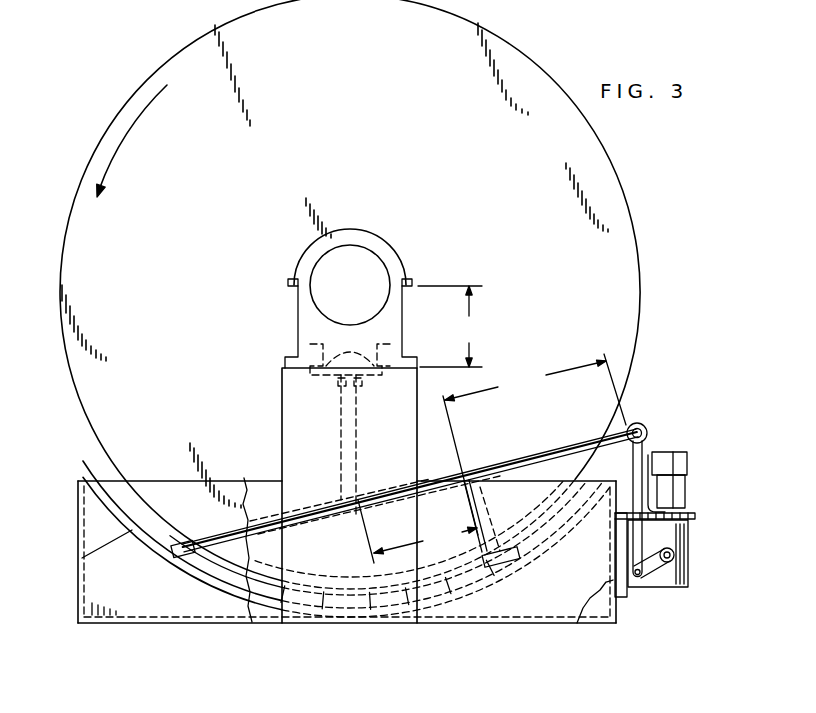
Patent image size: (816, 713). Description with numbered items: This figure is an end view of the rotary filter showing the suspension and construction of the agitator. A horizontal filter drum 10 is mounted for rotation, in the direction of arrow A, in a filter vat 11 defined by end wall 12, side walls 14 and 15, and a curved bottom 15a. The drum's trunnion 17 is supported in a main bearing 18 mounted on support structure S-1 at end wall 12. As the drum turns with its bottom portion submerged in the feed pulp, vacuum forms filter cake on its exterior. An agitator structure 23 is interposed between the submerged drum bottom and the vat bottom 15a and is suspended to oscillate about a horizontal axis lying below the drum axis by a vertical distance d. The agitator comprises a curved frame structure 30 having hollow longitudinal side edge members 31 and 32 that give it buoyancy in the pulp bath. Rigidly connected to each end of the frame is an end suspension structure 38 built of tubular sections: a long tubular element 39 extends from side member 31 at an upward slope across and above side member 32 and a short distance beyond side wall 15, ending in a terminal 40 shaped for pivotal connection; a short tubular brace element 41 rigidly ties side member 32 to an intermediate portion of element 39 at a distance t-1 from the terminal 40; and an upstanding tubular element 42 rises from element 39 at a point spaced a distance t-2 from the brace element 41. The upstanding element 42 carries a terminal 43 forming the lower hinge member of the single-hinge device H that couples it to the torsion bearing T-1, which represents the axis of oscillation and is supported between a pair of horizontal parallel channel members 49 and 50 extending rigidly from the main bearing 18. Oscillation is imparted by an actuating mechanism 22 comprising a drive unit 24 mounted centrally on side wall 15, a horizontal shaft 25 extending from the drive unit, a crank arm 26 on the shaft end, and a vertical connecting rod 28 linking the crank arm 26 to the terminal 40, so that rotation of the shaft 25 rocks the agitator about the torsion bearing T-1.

The filter drum 10 is at (365, 124).
The filter vat 11 is at (76, 488).
The end wall 12 is at (540, 606).
The side wall 14 is at (78, 535).
The side wall 15 is at (617, 602).
The curved bottom 15a is at (82, 560).
The trunnion 17 is at (335, 265).
The main bearing 18 is at (393, 257).
The actuating mechanism 22 is at (676, 445).
The agitator structure 23 is at (505, 580).
The drive unit 24 is at (676, 486).
The horizontal shaft 25 is at (678, 555).
The crank arm 26 is at (655, 567).
The connecting rod 28 is at (633, 461).
The curved frame structure 30 is at (222, 572).
The side edge member 31 is at (178, 543).
The side edge member 32 is at (409, 529).
The end suspension structure 38 is at (336, 499).
The long tubular element 39 is at (527, 460).
The terminal 40 is at (639, 423).
The short tubular brace element 41 is at (493, 509).
The upstanding tubular element 42 is at (341, 427).
The terminal 43 is at (353, 387).
The channel member 49 is at (382, 356).
The channel member 50 is at (320, 355).
The direction of rotation arrow A is at (117, 153).
The single-hinge device H is at (337, 388).
The torsion bearing T-1 is at (355, 353).
The support structure S-1 is at (398, 451).
The vertical distance d is at (450, 326).
The distance t-1 is at (534, 444).
The distance t-2 is at (417, 531).